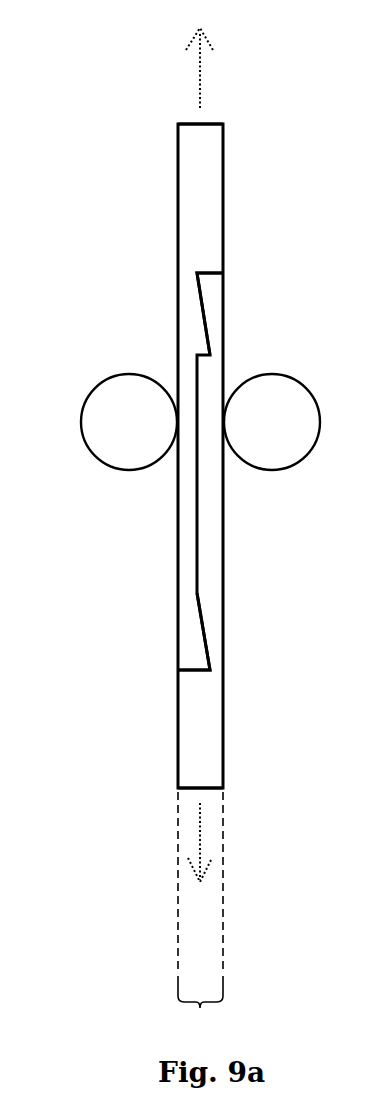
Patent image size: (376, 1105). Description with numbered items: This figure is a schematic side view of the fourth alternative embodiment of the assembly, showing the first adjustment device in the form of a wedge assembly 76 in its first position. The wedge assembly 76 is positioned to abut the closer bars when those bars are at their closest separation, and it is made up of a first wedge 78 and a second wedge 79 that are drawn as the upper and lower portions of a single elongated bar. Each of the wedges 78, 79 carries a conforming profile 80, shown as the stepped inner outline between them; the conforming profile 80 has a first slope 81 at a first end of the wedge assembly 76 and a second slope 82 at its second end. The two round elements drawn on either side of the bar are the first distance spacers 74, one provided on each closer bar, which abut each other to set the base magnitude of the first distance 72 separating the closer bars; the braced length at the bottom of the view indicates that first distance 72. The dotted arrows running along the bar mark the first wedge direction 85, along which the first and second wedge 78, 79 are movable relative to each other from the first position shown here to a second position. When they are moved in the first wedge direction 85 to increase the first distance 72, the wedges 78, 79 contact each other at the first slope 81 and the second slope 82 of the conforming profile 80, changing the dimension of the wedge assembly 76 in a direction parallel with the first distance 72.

The first distance 72 is at (200, 1006).
The first distance spacer 74 is at (110, 380).
The wedge assembly 76 is at (247, 212).
The first wedge 78 is at (197, 232).
The second wedge 79 is at (206, 740).
The conforming profile 80 is at (197, 550).
The first slope 81 is at (207, 330).
The second slope 82 is at (205, 645).
The first wedge direction 85 is at (203, 843).